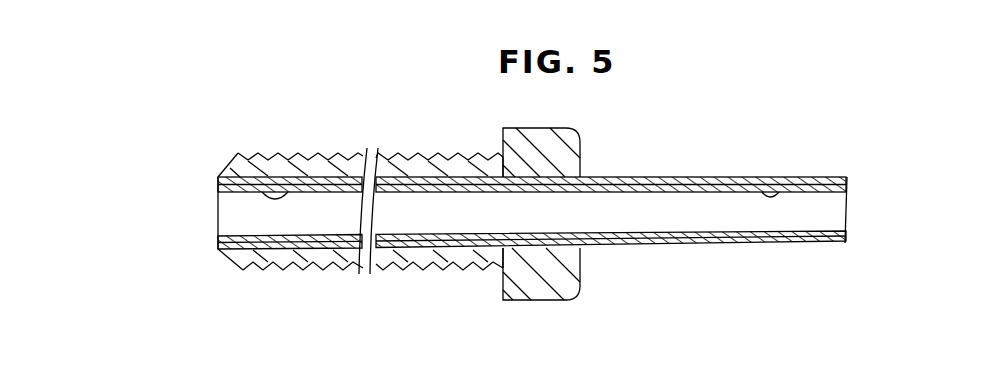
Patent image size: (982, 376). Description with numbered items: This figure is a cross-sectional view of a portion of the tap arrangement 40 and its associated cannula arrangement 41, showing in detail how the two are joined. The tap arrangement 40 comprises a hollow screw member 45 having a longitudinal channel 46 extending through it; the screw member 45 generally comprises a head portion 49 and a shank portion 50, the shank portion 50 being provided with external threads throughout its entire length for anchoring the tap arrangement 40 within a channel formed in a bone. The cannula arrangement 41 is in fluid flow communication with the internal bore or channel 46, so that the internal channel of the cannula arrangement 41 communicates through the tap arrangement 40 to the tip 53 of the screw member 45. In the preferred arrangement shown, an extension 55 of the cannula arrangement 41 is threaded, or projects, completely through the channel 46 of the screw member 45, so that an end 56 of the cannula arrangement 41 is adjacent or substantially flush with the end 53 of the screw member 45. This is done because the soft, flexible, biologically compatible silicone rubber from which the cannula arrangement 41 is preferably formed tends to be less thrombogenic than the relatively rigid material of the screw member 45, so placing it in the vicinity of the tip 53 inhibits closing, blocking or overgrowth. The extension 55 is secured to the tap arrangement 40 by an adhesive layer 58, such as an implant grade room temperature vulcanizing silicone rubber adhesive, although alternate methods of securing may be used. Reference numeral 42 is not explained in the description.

The tap arrangement 40 is at (358, 152).
The cannula arrangement 41 is at (625, 178).
The weld bead 42 is at (785, 177).
The hollow screw member 45 is at (313, 268).
The longitudinal channel 46 is at (254, 176).
The head portion 49 is at (542, 300).
The shank portion 50 is at (403, 270).
The tip 53 is at (217, 241).
The extension 55 is at (262, 242).
The end 56 is at (217, 212).
The adhesive layer 58 is at (479, 170).